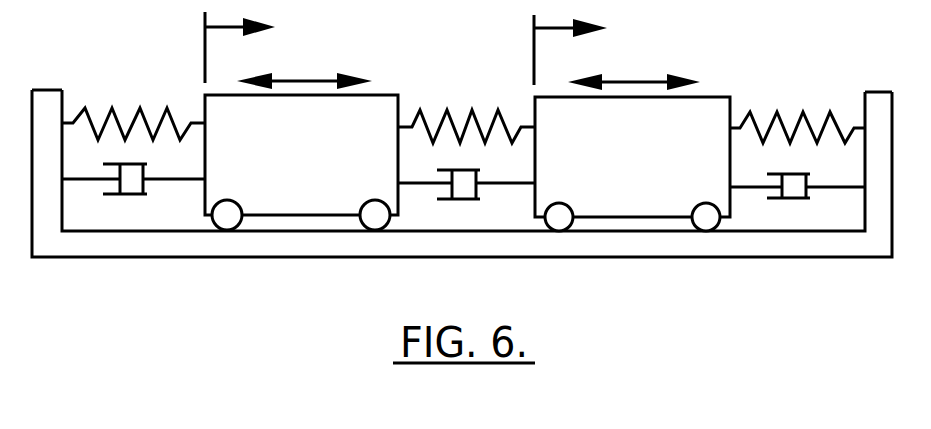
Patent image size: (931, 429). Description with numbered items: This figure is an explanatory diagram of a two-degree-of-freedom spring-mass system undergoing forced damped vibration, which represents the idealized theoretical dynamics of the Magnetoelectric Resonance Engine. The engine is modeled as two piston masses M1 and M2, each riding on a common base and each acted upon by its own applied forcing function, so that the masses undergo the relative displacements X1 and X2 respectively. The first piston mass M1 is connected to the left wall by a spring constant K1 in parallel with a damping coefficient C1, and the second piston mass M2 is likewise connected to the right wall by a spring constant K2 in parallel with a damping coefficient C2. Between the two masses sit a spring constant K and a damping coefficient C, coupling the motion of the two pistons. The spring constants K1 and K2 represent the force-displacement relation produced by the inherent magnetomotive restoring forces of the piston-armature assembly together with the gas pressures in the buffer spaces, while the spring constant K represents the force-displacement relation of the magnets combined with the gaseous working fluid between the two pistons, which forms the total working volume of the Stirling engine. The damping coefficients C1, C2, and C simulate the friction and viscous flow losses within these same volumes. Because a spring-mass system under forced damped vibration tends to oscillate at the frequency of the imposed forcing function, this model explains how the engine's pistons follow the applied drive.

The spring constant K1 is at (133, 107).
The damping coefficient C1 is at (133, 195).
The piston mass M1 is at (301, 162).
The spring constant K is at (466, 111).
The damping coefficient C is at (466, 199).
The piston mass M2 is at (632, 164).
The spring constant K2 is at (797, 111).
The damping coefficient C2 is at (797, 202).
The relative displacement X1 is at (260, 47).
The relative displacement X2 is at (590, 48).